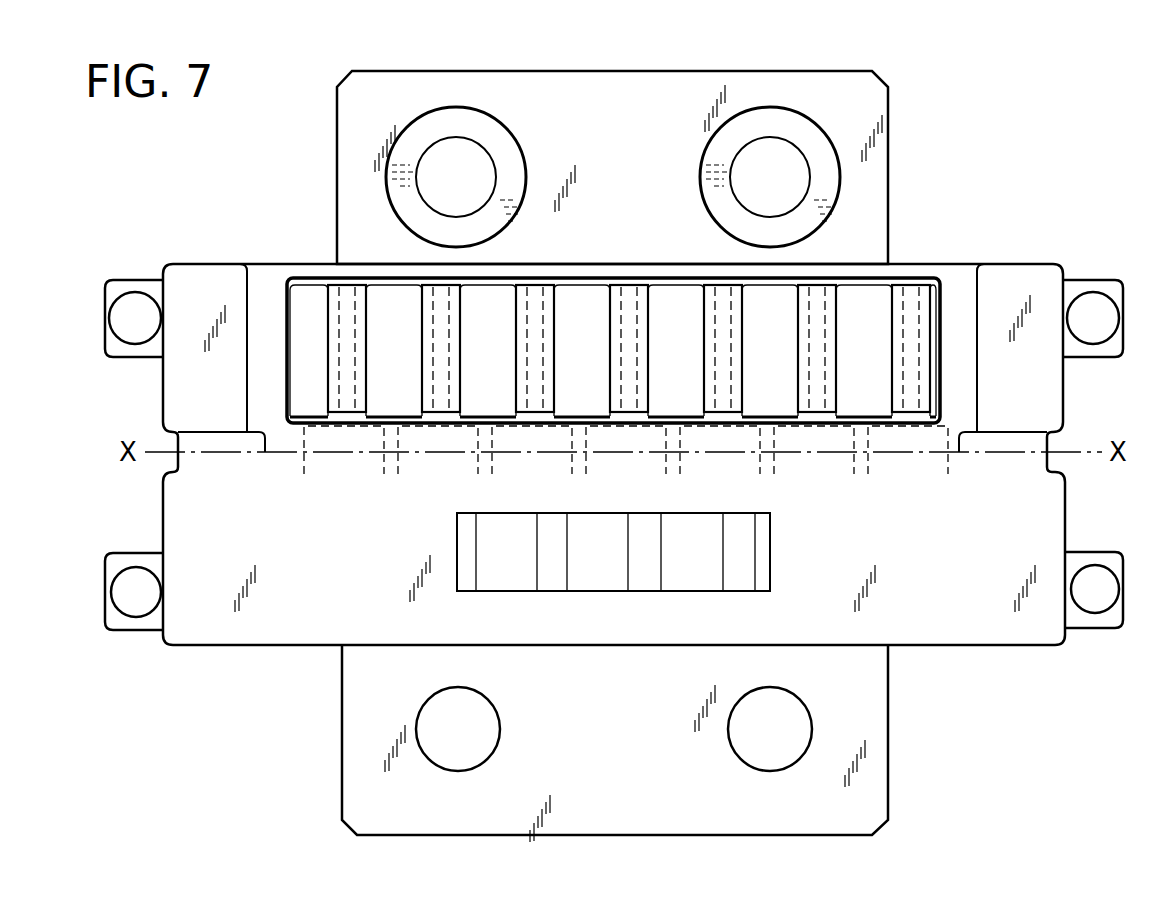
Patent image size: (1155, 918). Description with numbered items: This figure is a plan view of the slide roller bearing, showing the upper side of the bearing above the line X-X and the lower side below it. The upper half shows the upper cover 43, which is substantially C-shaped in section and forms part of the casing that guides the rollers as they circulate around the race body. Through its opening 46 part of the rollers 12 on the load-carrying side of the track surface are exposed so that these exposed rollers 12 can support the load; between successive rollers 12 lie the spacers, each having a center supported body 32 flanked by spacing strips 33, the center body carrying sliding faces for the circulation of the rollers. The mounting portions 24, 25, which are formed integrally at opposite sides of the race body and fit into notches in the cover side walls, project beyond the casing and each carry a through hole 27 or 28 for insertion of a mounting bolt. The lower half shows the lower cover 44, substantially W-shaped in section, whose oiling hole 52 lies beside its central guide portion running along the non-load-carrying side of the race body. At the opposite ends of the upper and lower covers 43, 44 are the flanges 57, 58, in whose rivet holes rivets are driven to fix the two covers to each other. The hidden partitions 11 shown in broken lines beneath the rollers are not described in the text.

The partition walls between terminal chambers 11 is at (859, 430).
The roller 12 is at (864, 300).
The mounting portion 24 is at (641, 88).
The mounting portion 25 is at (622, 820).
The through hole 27 is at (474, 147).
The through hole 28 is at (488, 701).
The center supported body 32 is at (910, 436).
The spacing strip 33 is at (911, 296).
The upper cover 43 is at (182, 400).
The lower cover 44 is at (246, 632).
The opening 46 is at (288, 292).
The oiling hole 52 is at (690, 589).
The flange 57 is at (138, 287).
The flange 58 is at (1092, 287).